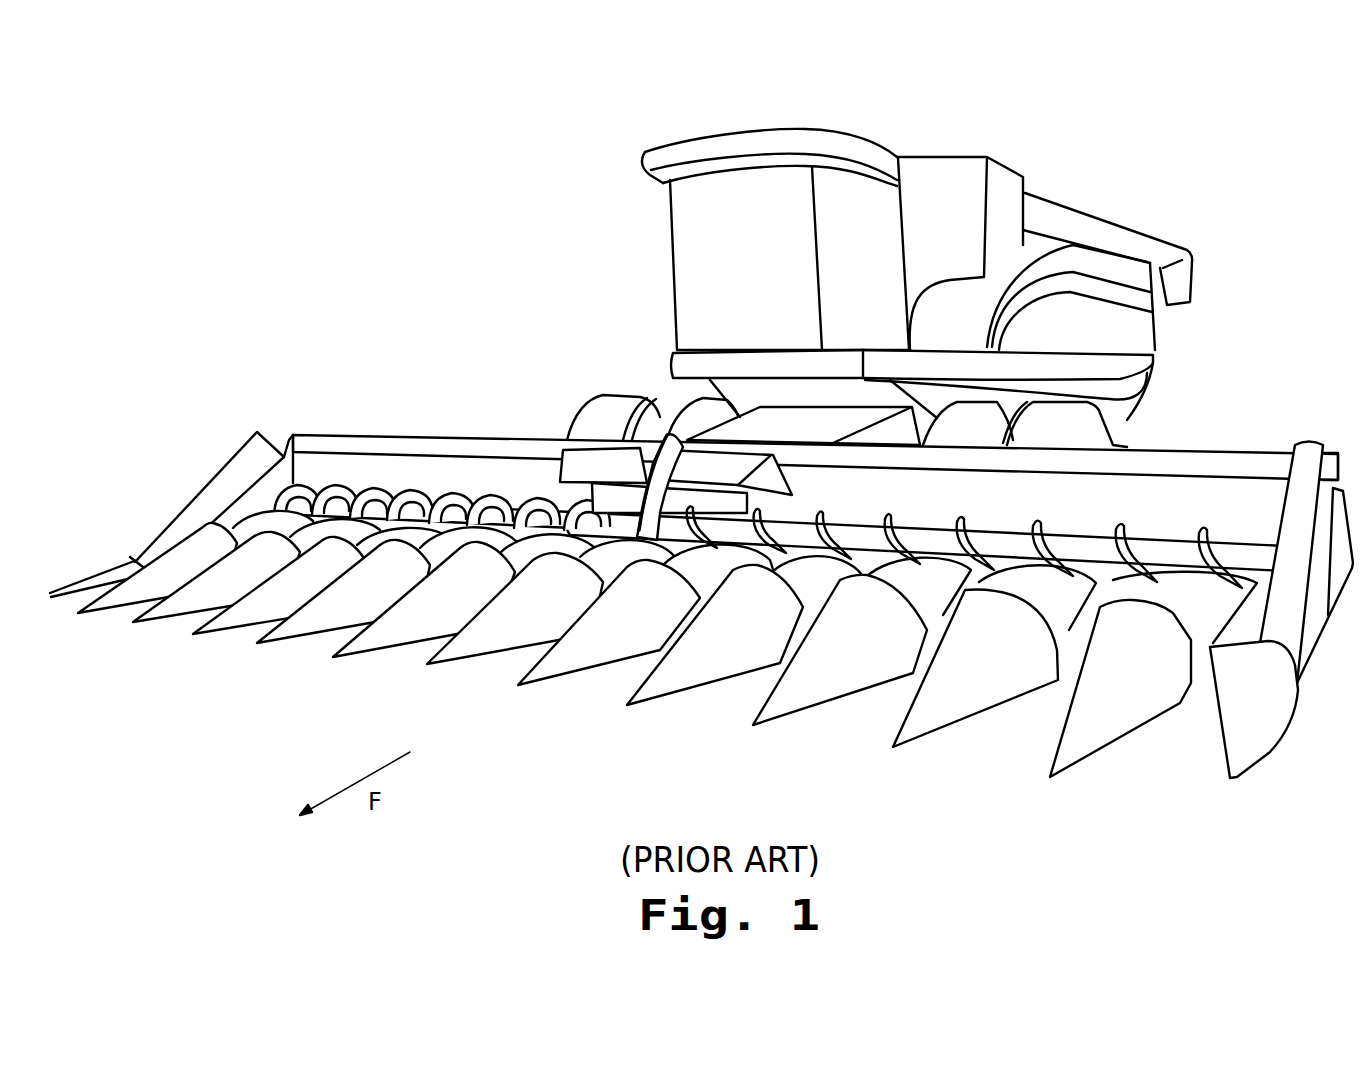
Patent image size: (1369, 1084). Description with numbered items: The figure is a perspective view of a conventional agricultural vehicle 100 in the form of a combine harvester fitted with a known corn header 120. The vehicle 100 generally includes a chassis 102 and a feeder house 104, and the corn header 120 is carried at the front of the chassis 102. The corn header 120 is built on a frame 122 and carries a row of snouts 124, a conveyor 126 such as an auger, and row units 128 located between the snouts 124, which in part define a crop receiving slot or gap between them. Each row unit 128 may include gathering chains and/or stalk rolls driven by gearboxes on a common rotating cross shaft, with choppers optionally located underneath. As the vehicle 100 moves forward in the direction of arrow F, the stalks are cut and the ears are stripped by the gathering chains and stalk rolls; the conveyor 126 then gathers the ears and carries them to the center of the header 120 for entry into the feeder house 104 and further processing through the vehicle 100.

The agricultural vehicle 100 is at (701, 437).
The chassis 102 is at (917, 288).
The feeder house 104 is at (737, 430).
The corn header 120 is at (701, 594).
The frame 122 is at (407, 447).
The snouts 124 is at (953, 703).
The conveyor 126 is at (1164, 532).
The row units 128 is at (616, 663).